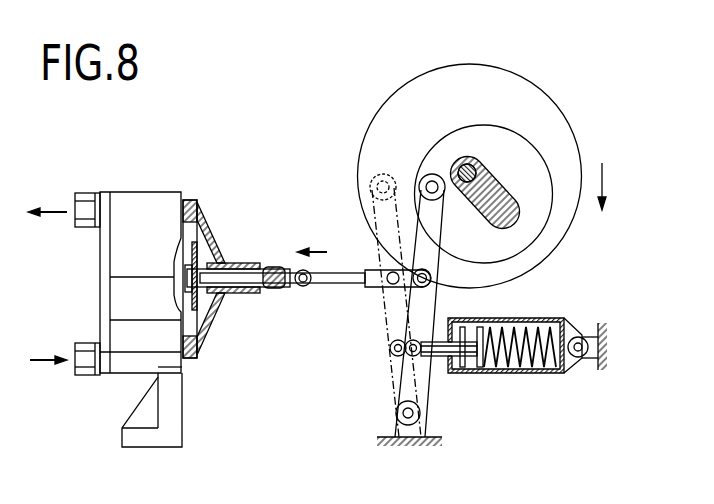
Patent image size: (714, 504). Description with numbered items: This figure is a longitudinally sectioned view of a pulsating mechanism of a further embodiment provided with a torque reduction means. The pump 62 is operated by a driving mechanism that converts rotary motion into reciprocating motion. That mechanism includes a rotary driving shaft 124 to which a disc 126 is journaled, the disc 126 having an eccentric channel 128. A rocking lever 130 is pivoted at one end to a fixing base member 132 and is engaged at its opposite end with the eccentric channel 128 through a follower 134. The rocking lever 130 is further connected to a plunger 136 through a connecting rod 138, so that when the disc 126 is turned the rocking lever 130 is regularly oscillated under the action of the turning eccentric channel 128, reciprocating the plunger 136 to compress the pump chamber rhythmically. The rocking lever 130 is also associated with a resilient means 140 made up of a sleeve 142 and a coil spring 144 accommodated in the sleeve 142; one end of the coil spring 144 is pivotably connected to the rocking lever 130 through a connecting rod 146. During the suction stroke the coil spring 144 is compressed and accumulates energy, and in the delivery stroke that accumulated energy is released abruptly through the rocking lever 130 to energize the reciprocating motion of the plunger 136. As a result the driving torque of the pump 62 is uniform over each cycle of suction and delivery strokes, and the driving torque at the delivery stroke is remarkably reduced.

The pump 62 is at (135, 213).
The rotary driving shaft 124 is at (457, 153).
The disc 126 is at (513, 128).
The eccentric channel 128 is at (515, 178).
The rocking lever 130 is at (417, 317).
The fixing base member 132 is at (390, 427).
The follower 134 is at (430, 173).
The plunger 136 is at (213, 268).
The connecting rod 138 is at (343, 278).
The resilient means 140 is at (514, 359).
The sleeve 142 is at (545, 318).
The coil spring 144 is at (506, 330).
The connecting rod 146 is at (435, 357).